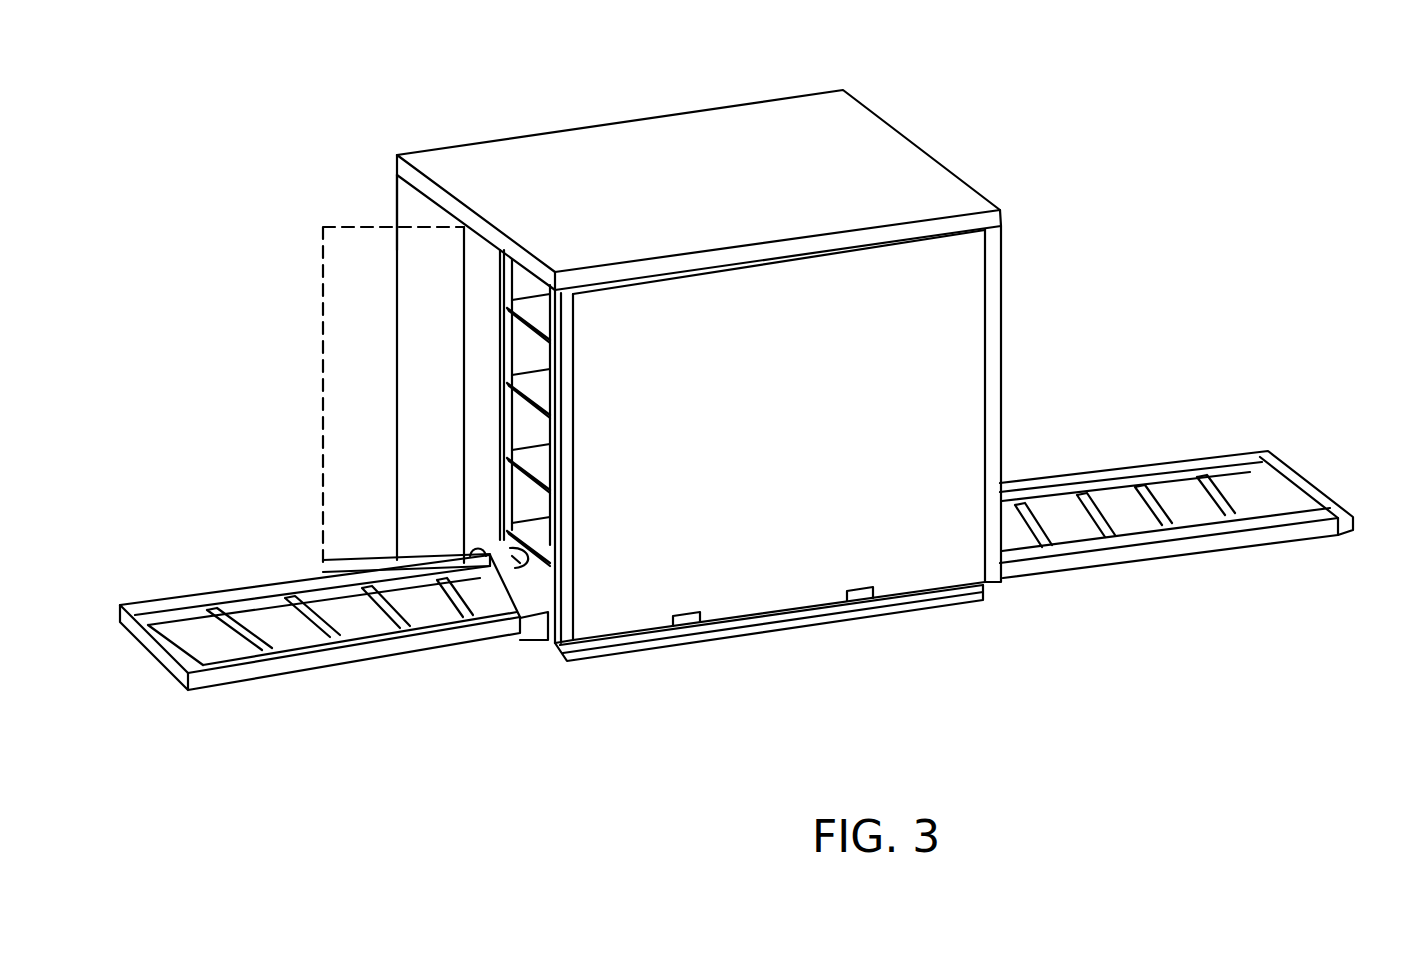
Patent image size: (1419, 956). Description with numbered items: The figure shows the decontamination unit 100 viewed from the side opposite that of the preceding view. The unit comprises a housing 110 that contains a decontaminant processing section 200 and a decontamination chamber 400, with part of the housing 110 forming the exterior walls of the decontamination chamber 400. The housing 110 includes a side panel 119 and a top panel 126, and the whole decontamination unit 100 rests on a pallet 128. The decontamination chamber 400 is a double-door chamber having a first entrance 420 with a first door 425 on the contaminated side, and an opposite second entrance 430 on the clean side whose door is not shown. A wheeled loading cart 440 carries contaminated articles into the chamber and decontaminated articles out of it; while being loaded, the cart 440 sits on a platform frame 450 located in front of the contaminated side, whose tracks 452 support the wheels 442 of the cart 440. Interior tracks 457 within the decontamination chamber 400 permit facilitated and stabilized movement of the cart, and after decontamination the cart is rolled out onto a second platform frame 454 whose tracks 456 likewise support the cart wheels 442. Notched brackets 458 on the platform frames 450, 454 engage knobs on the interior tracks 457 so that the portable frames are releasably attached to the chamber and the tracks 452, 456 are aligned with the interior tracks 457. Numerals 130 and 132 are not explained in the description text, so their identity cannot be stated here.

The decontamination unit 100 is at (544, 64).
The housing 110 is at (767, 100).
The side panel 119 is at (930, 363).
The top panel 126 is at (708, 130).
The pallet 128 is at (793, 617).
The opening 130 is at (397, 172).
The shelf assembly 132 is at (565, 370).
The decontaminant processing section 200 is at (408, 206).
The decontamination chamber 400 is at (456, 322).
The first entrance 420 is at (468, 455).
The first door 425 is at (322, 315).
The second entrance 430 is at (1008, 392).
The loading cart 440 is at (507, 360).
The wheels 442 is at (512, 555).
The platform frame 450 is at (150, 647).
The tracks 452 is at (307, 655).
The platform frame 454 is at (1313, 485).
The tracks 456 is at (1165, 535).
The interior tracks 457 is at (503, 570).
The notched brackets 458 is at (465, 562).